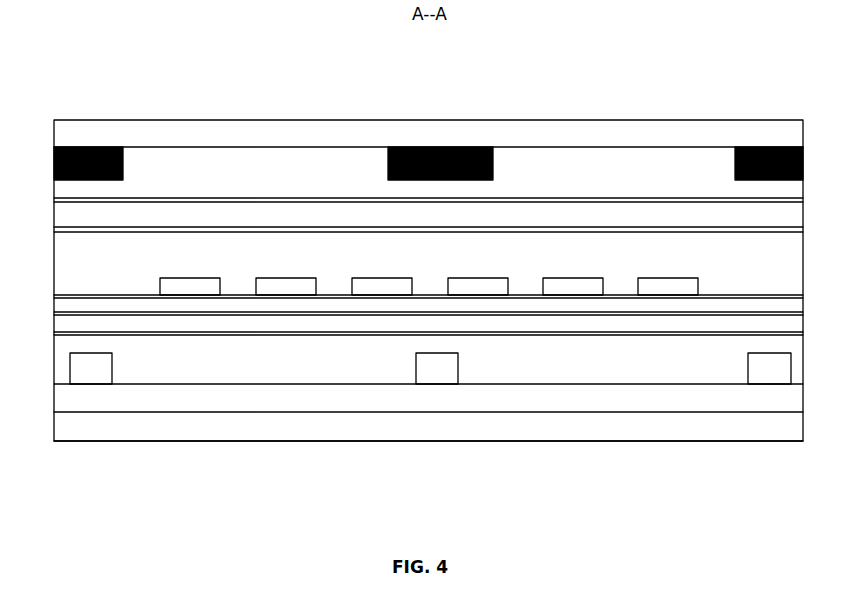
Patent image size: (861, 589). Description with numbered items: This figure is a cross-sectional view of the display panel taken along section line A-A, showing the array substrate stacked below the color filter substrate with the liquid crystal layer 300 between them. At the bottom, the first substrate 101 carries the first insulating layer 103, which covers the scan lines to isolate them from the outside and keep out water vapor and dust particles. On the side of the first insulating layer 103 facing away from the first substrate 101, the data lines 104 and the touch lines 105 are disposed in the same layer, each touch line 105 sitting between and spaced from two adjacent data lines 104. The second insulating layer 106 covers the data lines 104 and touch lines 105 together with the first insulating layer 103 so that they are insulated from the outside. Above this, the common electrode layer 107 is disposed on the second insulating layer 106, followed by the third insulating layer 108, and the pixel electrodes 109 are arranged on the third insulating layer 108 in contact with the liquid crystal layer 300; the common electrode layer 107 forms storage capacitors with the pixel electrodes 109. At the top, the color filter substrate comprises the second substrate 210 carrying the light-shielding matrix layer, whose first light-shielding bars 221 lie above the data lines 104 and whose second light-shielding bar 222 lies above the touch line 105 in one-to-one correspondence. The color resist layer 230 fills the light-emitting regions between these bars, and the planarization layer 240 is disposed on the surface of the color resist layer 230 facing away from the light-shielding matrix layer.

The first substrate 101 is at (562, 441).
The first insulating layer 103 is at (415, 400).
The data lines 104 is at (80, 361).
The touch lines 105 is at (428, 360).
The second insulating layer 106 is at (187, 360).
The common electrode layer 107 is at (160, 322).
The third insulating layer 108 is at (729, 308).
The pixel electrodes 109 is at (281, 280).
The second substrate 210 is at (207, 147).
The first light-shielding bars 221 is at (93, 146).
The second light-shielding bars 222 is at (437, 146).
The color resist layer 230 is at (535, 173).
The planarization layer 240 is at (160, 217).
The liquid crystal layer 300 is at (588, 253).